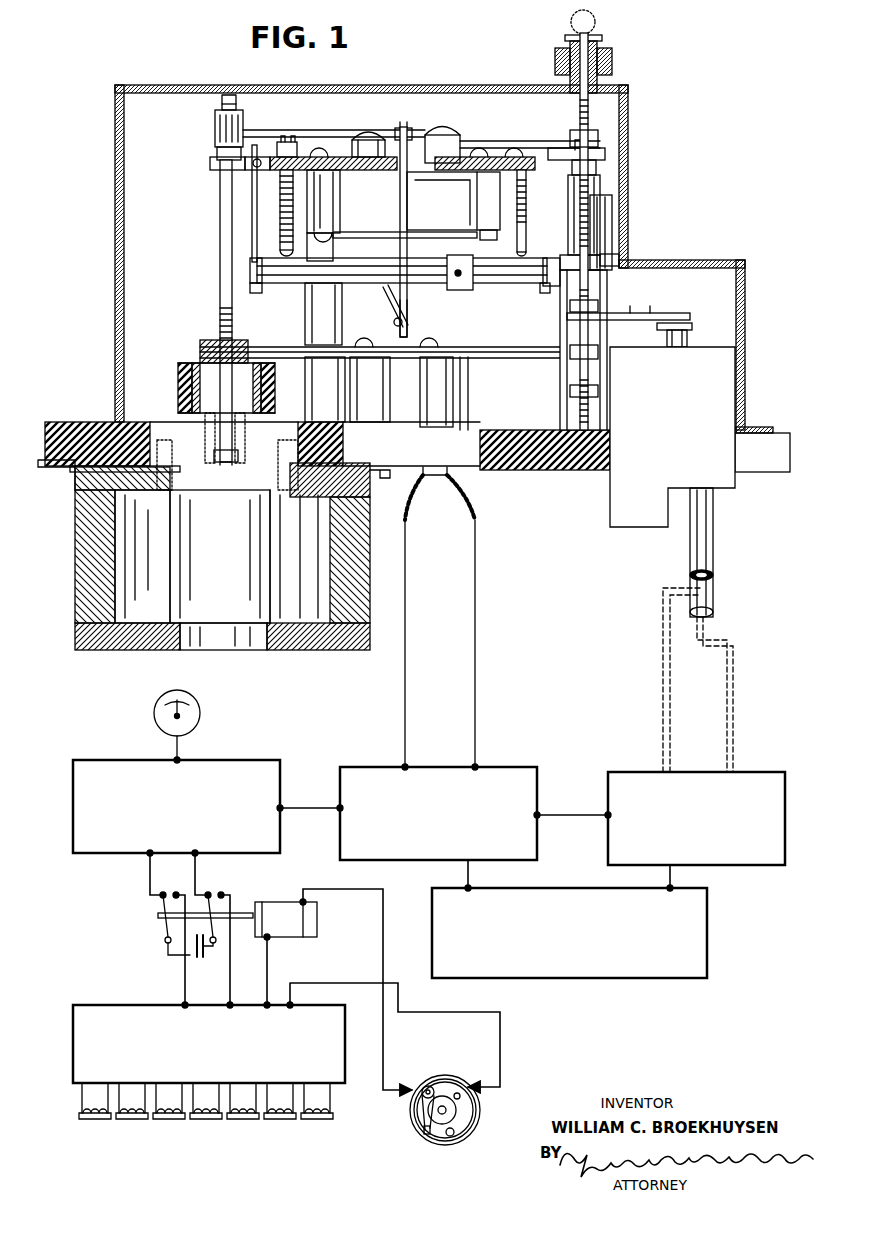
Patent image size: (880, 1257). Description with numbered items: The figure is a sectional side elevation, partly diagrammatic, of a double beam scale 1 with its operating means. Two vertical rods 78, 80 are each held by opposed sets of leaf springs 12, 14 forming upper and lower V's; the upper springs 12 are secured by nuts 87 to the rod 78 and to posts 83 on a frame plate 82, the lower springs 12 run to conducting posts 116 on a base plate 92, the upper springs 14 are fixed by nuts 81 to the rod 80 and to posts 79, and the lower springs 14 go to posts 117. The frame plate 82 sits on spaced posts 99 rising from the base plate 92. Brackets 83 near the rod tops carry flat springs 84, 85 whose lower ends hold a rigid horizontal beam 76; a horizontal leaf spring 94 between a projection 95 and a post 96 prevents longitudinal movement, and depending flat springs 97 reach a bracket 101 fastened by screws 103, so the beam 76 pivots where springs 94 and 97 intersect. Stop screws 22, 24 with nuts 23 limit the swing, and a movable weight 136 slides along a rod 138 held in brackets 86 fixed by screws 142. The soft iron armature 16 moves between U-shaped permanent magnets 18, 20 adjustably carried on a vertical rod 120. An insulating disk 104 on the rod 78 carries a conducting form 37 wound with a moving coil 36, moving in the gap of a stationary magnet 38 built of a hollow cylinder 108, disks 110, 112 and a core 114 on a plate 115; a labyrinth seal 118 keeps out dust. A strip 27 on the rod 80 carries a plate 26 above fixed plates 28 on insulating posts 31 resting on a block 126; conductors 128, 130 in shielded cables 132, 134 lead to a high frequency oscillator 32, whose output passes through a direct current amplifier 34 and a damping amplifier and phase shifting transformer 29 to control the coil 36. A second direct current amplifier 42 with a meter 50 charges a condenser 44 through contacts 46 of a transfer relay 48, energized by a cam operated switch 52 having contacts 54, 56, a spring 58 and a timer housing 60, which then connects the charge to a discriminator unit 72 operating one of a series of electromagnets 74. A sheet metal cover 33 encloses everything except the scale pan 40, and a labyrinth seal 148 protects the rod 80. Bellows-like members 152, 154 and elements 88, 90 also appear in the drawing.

The double beam scale 1 is at (368, 122).
The leaf spring 12 is at (297, 150).
The leaf spring 14 is at (465, 140).
The armature 16 is at (620, 262).
The permanent magnet 18 is at (613, 226).
The permanent magnet 20 is at (604, 300).
The stop screw 22 is at (280, 206).
The nut 23 is at (318, 150).
The stop screw 24 is at (488, 242).
The plate 26 is at (692, 326).
The insulating strip 27 is at (644, 318).
The stationary plate 28 is at (688, 336).
The damping amplifier and phase shifting transformer 29 is at (653, 982).
The post 31 is at (672, 346).
The high frequency oscillator 32 is at (758, 774).
The cover 33 is at (492, 92).
The direct current amplifier 34 is at (506, 771).
The moving coil 36 is at (158, 494).
The form 37 is at (200, 486).
The stationary magnet 38 is at (74, 605).
The scale pan 40 is at (594, 36).
The second direct current amplifier 42 is at (236, 771).
The condenser 44 is at (196, 957).
The contacts 46 is at (216, 891).
The transfer relay 48 is at (296, 938).
The meter 50 is at (196, 722).
The cam operated switch 52 is at (412, 1140).
The contact 54 is at (428, 1136).
The contact 56 is at (452, 1136).
The spring 58 is at (436, 1088).
The timer housing 60 is at (480, 1110).
The discriminator unit 72 is at (118, 1003).
The electromagnets 74 is at (91, 1122).
The beam 76 is at (408, 302).
The vertical rod 78 is at (220, 232).
The post 79 is at (358, 138).
The vertical rod 80 is at (590, 112).
The nut 81 is at (598, 136).
The frame plate 82 is at (210, 164).
The bracket 83 is at (435, 140).
The flat spring 84 is at (252, 212).
The flat spring 85 is at (523, 236).
The bracket 86 is at (250, 288).
The nut 87 is at (215, 122).
The pin 88 is at (244, 132).
The cylinder 90 is at (328, 215).
The base plate 92 is at (108, 420).
The horizontal leaf spring 94 is at (462, 238).
The projection 95 is at (330, 246).
The post 96 is at (492, 190).
The flat spring 97 is at (407, 200).
The post 99 is at (402, 130).
The bracket 101 is at (394, 324).
The screw 103 is at (388, 293).
The disk 104 is at (208, 466).
The hollow cylinder 108 is at (95, 545).
The disk 110 is at (96, 505).
The disk 112 is at (108, 650).
The core 114 is at (215, 625).
The plate 115 is at (72, 428).
The post 116 is at (464, 394).
The post 117 is at (420, 383).
The labyrinth seal 118 is at (190, 362).
The vertical rod 120 is at (576, 405).
The block 126 is at (652, 520).
The conductor 128 is at (660, 700).
The conductor 130 is at (736, 702).
The shielded cable 132 is at (714, 556).
The shielded cable 134 is at (714, 606).
The movable weight 136 is at (462, 290).
The rod 138 is at (300, 276).
The screw 142 is at (250, 265).
The labyrinth seal 148 is at (614, 62).
The bellows 152 is at (405, 690).
The bellows 154 is at (476, 696).